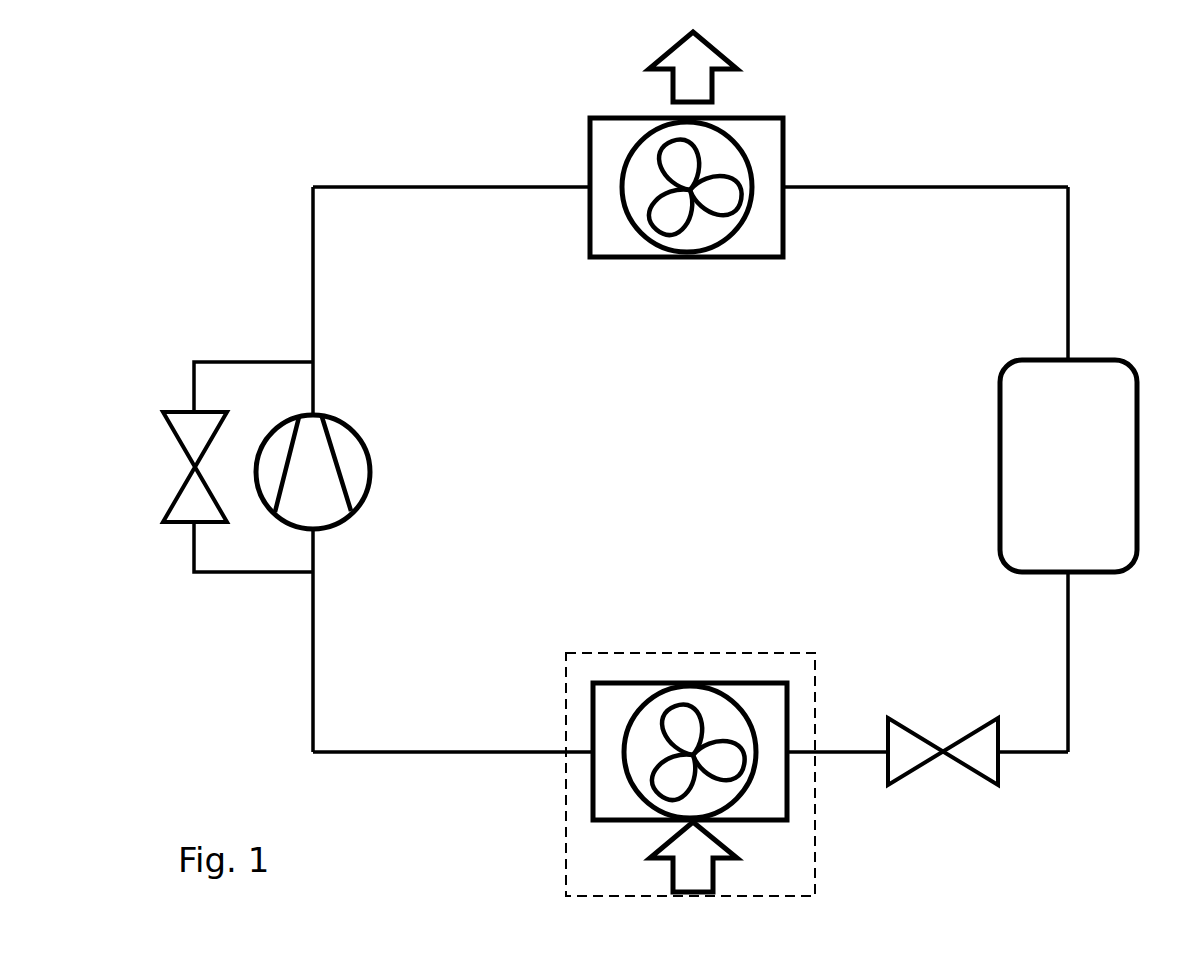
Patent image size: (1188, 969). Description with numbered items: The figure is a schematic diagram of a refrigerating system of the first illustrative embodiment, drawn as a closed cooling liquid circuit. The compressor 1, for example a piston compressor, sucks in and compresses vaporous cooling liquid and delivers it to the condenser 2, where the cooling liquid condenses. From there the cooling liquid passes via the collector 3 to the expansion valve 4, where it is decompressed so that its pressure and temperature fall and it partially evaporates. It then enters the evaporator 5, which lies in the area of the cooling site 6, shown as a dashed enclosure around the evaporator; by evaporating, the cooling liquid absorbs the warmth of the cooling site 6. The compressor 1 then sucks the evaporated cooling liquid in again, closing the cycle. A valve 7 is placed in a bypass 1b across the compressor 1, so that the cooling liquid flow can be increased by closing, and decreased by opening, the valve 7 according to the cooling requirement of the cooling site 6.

The compressor 1 is at (370, 470).
The bypass 1b is at (262, 570).
The condenser 2 is at (782, 155).
The collector 3 is at (1137, 408).
The expansion valve 4 is at (1000, 762).
The evaporator 5 is at (768, 687).
The cooling site 6 is at (815, 856).
The valve 7 is at (173, 438).